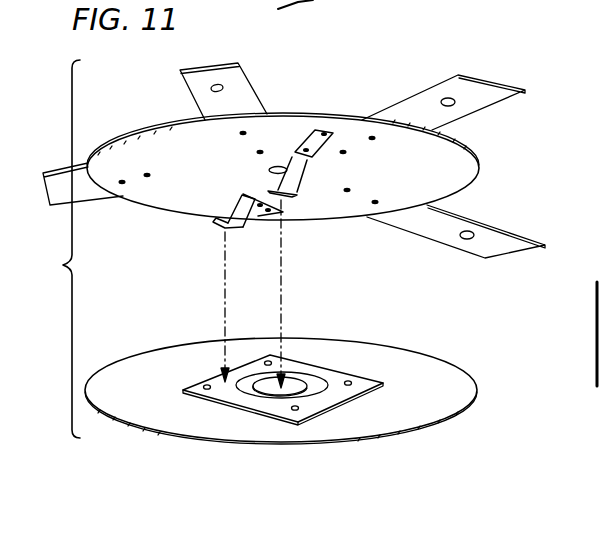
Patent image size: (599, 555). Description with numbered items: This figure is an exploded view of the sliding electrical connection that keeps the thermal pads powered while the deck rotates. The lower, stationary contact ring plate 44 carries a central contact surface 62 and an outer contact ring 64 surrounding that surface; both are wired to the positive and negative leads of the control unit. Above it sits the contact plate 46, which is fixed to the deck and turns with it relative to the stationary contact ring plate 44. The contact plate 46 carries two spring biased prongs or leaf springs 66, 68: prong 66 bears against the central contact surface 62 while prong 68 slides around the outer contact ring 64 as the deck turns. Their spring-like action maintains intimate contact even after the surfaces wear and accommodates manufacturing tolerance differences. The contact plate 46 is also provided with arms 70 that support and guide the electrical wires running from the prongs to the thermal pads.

The contact ring plate 44 is at (405, 362).
The contact plate 46 is at (465, 173).
The central contact surface 62 is at (262, 387).
The outer contact ring 64 is at (308, 362).
The spring biased prong 66 is at (300, 175).
The spring biased prong 68 is at (213, 221).
The arms 70 is at (492, 82).